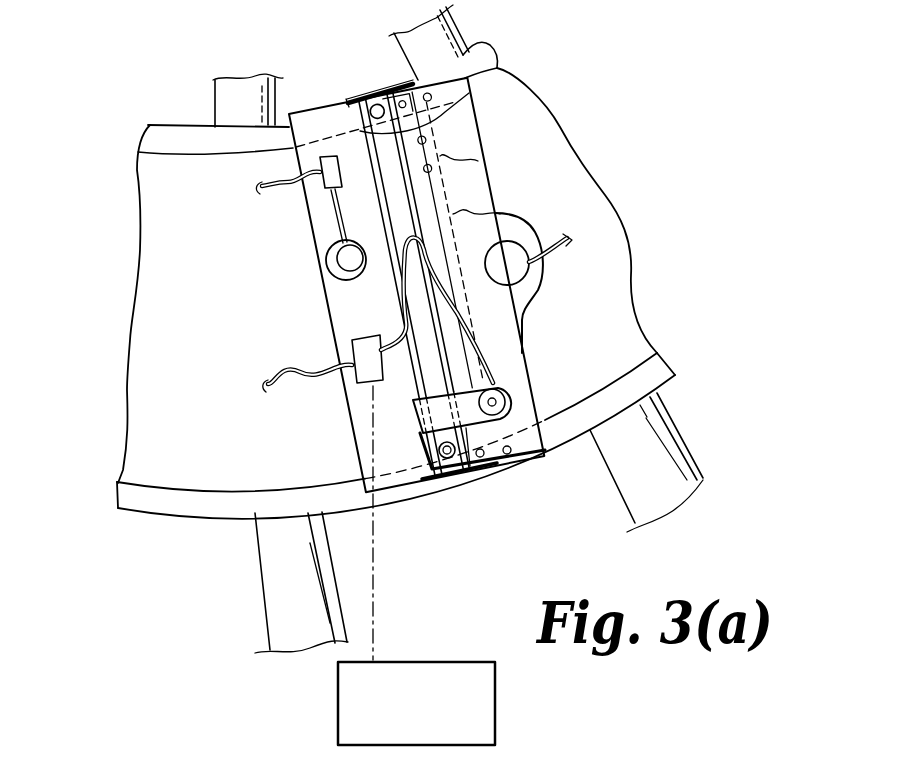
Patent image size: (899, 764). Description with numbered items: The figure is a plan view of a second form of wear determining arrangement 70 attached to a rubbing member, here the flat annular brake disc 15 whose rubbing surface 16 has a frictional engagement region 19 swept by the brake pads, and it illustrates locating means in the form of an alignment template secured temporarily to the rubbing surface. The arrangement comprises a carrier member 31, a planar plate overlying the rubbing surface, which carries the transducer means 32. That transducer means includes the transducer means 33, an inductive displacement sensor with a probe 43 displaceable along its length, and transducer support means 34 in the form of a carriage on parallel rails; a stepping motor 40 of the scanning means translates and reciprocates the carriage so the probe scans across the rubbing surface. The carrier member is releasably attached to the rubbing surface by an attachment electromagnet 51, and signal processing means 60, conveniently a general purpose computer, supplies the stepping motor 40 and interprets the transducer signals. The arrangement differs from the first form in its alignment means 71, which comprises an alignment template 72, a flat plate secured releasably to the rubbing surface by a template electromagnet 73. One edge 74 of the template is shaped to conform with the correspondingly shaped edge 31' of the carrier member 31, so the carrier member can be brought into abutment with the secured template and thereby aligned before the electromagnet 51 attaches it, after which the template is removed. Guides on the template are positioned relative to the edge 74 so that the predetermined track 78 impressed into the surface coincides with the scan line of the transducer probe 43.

The brake disc 15 is at (466, 44).
The rubbing surface 16 is at (170, 147).
The frictional engagement region 19 is at (167, 278).
The wear determining arrangement 70 is at (343, 95).
The alignment means 71 is at (408, 80).
The alignment template 72 is at (477, 121).
The edge of the template 74 is at (478, 161).
The predetermined track 78 is at (500, 214).
The template electromagnet 73 is at (512, 268).
The probe 43 is at (503, 376).
The transducer means 33 is at (502, 394).
The edge of the carrier member 31' is at (308, 162).
The electromagnet 51 is at (319, 269).
The carrier member 31 is at (323, 393).
The stepping motor 40 is at (443, 484).
The transducer support means 34 is at (471, 430).
The transducer means 32 is at (513, 430).
The signal processing means 60 is at (438, 666).